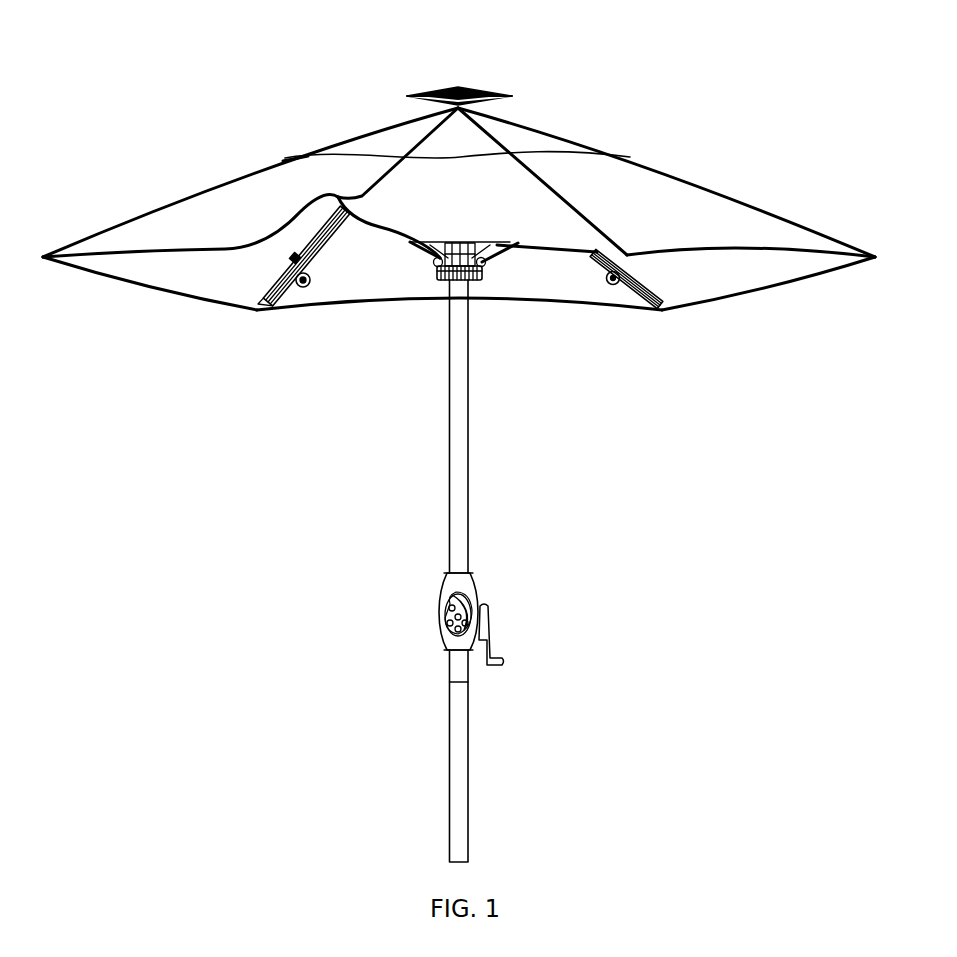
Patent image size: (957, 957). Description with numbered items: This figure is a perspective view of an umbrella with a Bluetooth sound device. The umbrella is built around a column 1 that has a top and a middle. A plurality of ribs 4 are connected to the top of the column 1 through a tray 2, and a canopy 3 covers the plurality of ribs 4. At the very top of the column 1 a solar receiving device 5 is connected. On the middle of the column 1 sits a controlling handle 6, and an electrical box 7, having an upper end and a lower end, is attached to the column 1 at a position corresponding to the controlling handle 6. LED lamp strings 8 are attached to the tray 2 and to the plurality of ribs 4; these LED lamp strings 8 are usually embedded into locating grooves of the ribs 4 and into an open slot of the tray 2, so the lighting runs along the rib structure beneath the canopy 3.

The column 1 is at (460, 462).
The tray 2 is at (477, 279).
The canopy 3 is at (628, 202).
The ribs 4 is at (327, 252).
The solar receiving device 5 is at (473, 88).
The controlling handle 6 is at (490, 645).
The electrical box 7 is at (440, 593).
The LED lamp strings 8 is at (297, 290).